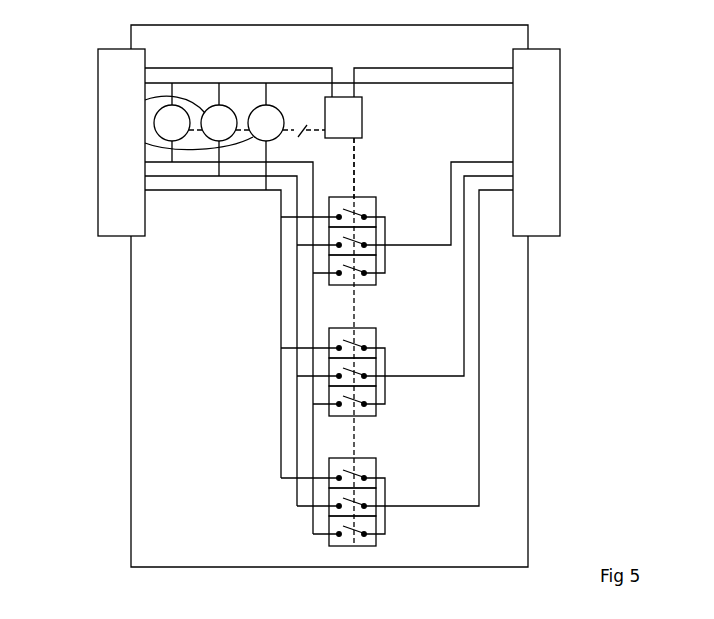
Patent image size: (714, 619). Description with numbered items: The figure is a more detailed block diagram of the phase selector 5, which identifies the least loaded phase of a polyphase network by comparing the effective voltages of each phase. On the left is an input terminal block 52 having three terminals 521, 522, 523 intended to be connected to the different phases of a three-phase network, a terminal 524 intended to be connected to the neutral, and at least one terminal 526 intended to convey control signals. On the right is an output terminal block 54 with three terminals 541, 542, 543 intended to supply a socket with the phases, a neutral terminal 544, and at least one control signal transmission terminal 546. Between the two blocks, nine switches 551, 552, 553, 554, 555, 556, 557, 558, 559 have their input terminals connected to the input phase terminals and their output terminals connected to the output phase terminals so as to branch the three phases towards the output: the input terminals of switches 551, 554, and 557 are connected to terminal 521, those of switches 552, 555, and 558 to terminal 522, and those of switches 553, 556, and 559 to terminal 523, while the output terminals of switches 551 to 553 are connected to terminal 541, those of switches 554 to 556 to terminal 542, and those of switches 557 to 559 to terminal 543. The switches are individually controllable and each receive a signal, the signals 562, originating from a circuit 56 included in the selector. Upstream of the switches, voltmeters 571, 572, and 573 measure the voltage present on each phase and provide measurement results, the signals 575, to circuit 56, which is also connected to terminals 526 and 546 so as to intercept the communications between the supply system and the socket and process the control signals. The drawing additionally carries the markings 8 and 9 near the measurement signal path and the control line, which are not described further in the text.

The selector 5 is at (131, 372).
The switch 8 is at (299, 141).
The control line 9 is at (363, 167).
The input terminal block 52 is at (98, 222).
The output terminal block 54 is at (560, 122).
The circuit 56 is at (362, 116).
The terminal 521 is at (145, 162).
The terminal 522 is at (145, 176).
The terminal 523 is at (145, 190).
The terminal 524 is at (145, 83).
The terminal 526 is at (145, 68).
The terminal 541 is at (513, 162).
The terminal 542 is at (513, 176).
The terminal 543 is at (513, 190).
The neutral terminal 544 is at (513, 83).
The control signal transmission terminal 546 is at (513, 68).
The switch 551 is at (376, 206).
The switch 552 is at (385, 234).
The switch 553 is at (385, 265).
The switch 554 is at (376, 337).
The switch 555 is at (385, 365).
The switch 556 is at (385, 396).
The switch 557 is at (376, 467).
The switch 558 is at (385, 495).
The switch 559 is at (385, 526).
The signals 562 is at (354, 156).
The voltmeter 571 is at (154, 123).
The voltmeter 572 is at (145, 100).
The voltmeter 573 is at (145, 143).
The signals 575 is at (294, 129).